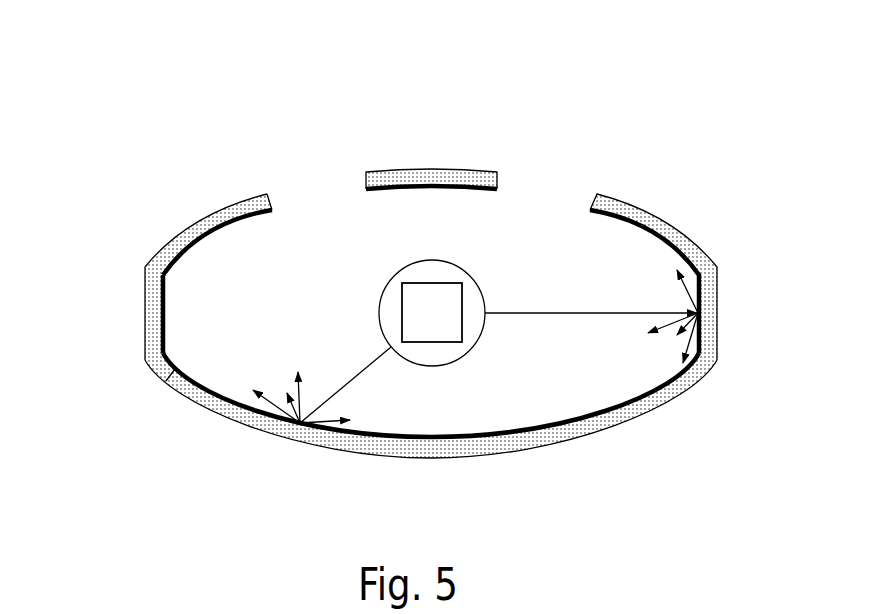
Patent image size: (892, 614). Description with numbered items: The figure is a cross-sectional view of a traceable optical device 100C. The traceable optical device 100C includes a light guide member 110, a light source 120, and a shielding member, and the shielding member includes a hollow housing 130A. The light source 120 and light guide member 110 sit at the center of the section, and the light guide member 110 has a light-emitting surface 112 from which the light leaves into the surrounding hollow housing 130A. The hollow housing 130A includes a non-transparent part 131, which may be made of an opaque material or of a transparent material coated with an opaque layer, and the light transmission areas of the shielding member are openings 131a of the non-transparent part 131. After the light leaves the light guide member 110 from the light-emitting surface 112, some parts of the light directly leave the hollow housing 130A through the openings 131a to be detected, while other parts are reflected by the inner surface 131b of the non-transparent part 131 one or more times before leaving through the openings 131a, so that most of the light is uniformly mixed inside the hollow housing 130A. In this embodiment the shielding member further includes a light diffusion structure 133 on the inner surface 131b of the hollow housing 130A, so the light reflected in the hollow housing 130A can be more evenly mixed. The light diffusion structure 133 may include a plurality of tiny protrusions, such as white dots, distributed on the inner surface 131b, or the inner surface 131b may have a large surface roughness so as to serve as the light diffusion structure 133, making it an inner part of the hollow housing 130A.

The traceable optical device 100C is at (92, 24).
The light guide member 110 is at (472, 328).
The light-emitting surface 112 is at (457, 363).
The light source 120 is at (433, 328).
The hollow housing 130A is at (197, 137).
The non-transparent part 131 is at (200, 228).
The openings 131a is at (315, 192).
The inner surface 131b is at (162, 312).
The light diffusion structure 133 is at (168, 379).